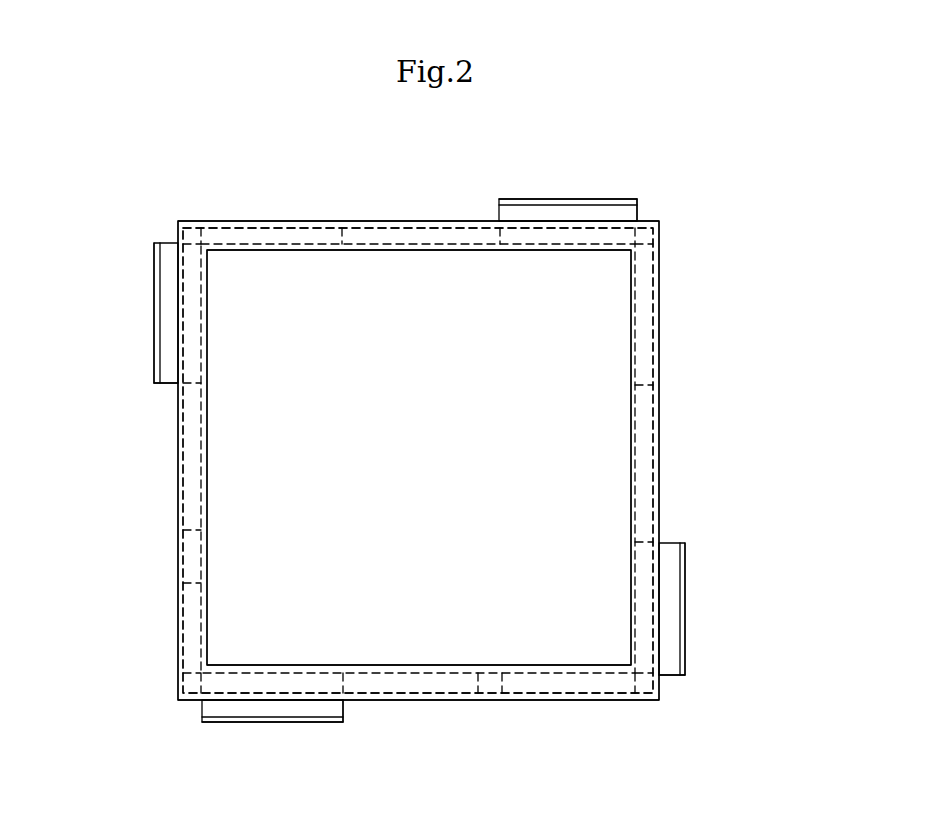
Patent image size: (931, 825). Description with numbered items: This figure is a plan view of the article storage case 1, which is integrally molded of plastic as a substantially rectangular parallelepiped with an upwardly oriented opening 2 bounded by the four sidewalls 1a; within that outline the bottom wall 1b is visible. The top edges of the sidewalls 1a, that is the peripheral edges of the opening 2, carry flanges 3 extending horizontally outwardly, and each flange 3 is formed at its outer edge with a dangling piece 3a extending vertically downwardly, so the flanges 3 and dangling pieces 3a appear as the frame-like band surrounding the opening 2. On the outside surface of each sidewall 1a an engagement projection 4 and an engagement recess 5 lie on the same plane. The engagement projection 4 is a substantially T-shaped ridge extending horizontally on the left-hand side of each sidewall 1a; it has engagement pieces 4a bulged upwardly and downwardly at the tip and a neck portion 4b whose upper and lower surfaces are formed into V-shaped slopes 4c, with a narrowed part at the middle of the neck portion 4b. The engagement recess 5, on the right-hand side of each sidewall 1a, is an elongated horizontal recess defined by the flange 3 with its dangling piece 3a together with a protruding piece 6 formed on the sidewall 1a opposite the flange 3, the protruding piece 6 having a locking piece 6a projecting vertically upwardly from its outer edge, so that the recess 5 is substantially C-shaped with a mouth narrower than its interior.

The article storage case 1 is at (271, 215).
The sidewall 1a is at (441, 242).
The bottom wall 1b is at (402, 464).
The opening 2 is at (387, 313).
The flange 3 is at (330, 228).
The dangling piece 3a is at (481, 222).
The engagement projection 4 is at (574, 195).
The engagement piece 4a is at (530, 200).
The neck portion 4b is at (596, 216).
The V-shaped slope 4c is at (628, 218).
The engagement recess 5 is at (284, 216).
The protruding piece 6 is at (224, 220).
The locking piece 6a is at (305, 220).